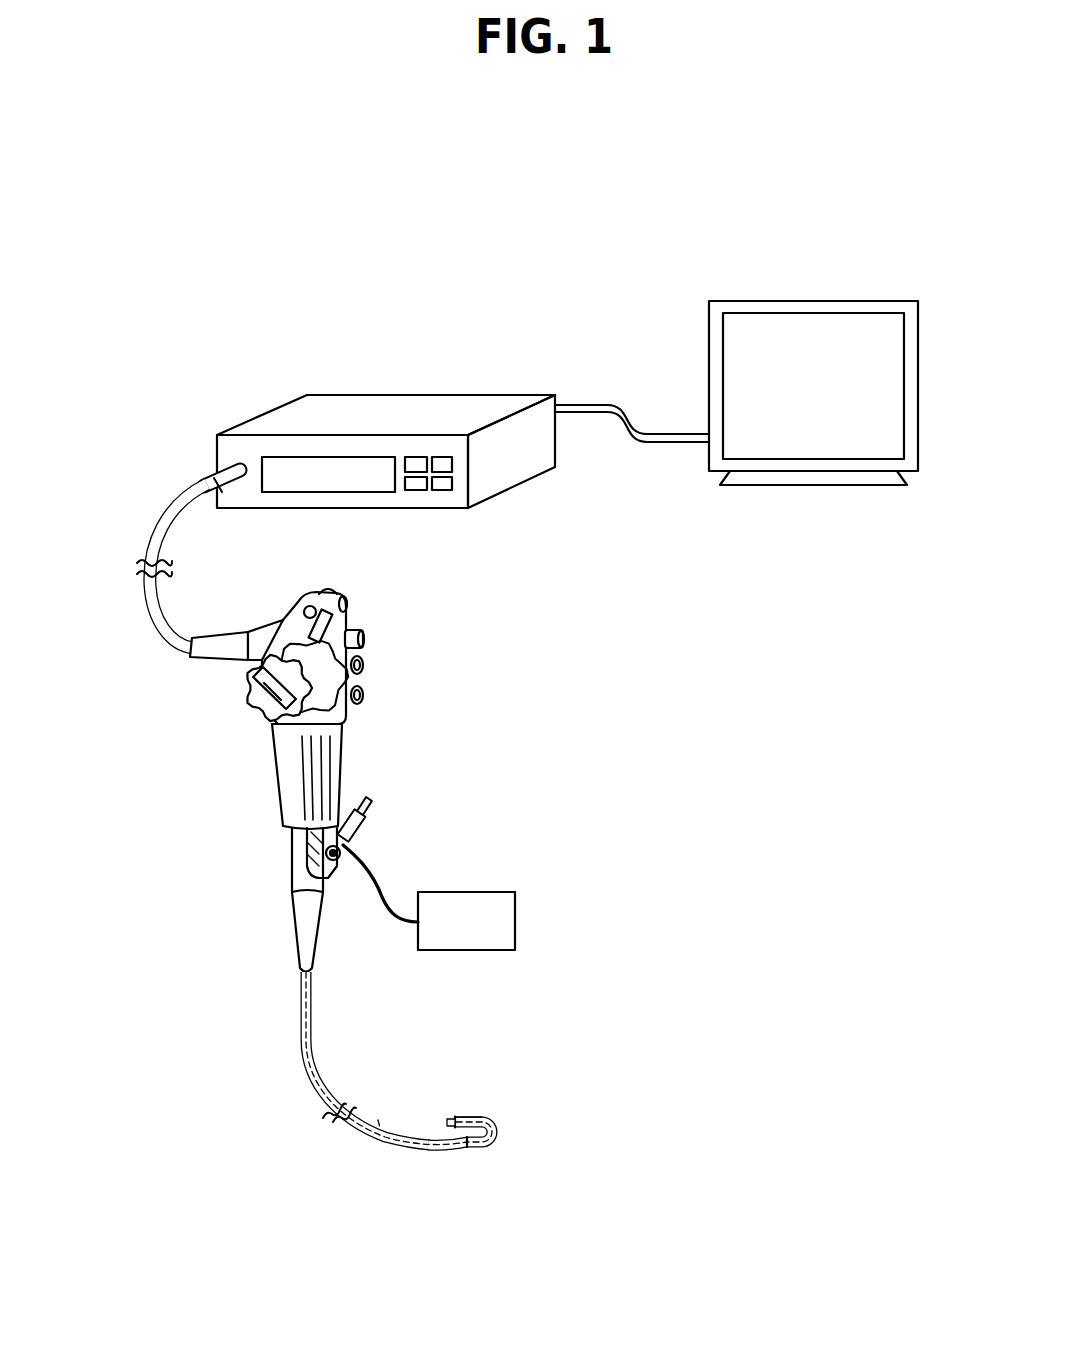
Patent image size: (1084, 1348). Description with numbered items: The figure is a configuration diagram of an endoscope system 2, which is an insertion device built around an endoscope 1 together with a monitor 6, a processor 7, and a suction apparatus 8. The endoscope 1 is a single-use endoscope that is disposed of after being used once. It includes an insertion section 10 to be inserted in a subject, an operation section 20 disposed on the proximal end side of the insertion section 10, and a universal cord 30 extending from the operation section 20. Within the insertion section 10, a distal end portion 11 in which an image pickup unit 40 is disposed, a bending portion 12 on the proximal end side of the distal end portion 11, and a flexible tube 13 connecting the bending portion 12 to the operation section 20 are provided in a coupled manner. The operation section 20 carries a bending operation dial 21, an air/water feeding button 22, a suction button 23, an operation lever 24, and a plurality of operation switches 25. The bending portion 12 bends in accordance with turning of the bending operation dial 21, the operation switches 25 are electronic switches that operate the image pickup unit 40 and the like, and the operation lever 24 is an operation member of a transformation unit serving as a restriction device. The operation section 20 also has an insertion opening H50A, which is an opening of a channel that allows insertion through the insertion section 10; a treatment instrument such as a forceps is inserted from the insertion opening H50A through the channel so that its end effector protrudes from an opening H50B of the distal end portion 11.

The endoscope 1 is at (251, 775).
The endoscope system 2 is at (709, 160).
The monitor 6 is at (817, 301).
The processor 7 is at (356, 395).
The suction apparatus 8 is at (476, 892).
The insertion section 10 is at (513, 1225).
The distal end portion 11 is at (448, 1153).
The bending portion 12 is at (497, 1147).
The flexible tube 13 is at (390, 1147).
The operation section 20 is at (293, 622).
The bending operation dial 21 is at (250, 700).
The air/water feeding button 22 is at (363, 670).
The suction button 23 is at (363, 697).
The operation lever 24 is at (330, 590).
The operation switches 25 is at (365, 642).
The universal cord 30 is at (151, 598).
The image pickup unit 40 is at (462, 1115).
The insertion opening H50A is at (303, 836).
The opening H50B is at (442, 1116).